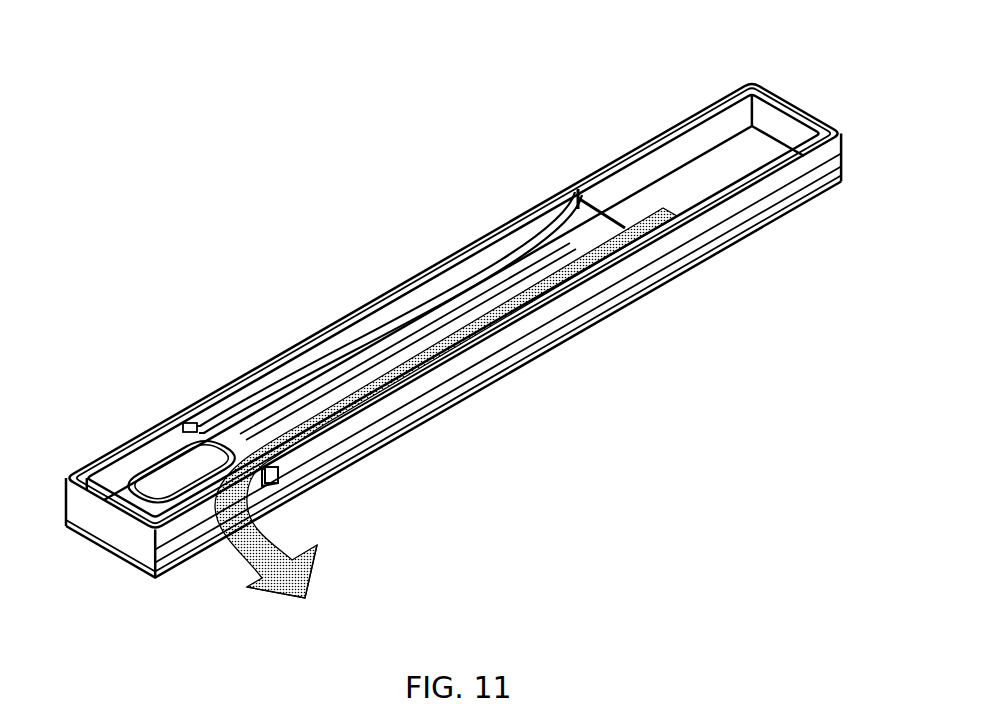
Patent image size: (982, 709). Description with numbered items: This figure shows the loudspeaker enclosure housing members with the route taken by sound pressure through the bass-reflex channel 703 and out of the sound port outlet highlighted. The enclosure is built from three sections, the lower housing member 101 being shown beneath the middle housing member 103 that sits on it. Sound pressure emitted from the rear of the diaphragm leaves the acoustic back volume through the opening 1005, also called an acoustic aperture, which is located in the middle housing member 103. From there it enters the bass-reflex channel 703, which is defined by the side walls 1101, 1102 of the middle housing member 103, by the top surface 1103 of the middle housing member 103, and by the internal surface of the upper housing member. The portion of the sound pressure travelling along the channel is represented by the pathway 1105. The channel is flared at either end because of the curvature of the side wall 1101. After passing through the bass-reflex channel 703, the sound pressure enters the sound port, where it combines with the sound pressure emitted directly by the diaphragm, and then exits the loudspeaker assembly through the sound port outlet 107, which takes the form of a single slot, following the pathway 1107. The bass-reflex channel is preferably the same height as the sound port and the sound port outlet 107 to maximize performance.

The lower housing member 101 is at (532, 385).
The opening 1005 is at (703, 150).
The middle housing member 103 is at (565, 181).
The bass-reflex channel 703 is at (250, 430).
The pathway 1105 is at (403, 363).
The top surface 1103 is at (590, 225).
The side wall 1102 is at (517, 308).
The side wall 1101 is at (542, 259).
The sound port outlet 107 is at (272, 492).
The pathway 1107 is at (262, 548).